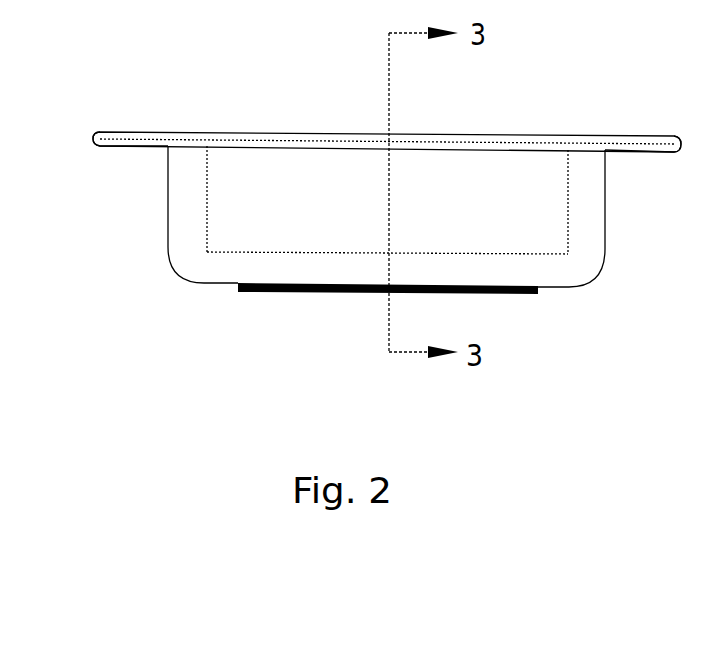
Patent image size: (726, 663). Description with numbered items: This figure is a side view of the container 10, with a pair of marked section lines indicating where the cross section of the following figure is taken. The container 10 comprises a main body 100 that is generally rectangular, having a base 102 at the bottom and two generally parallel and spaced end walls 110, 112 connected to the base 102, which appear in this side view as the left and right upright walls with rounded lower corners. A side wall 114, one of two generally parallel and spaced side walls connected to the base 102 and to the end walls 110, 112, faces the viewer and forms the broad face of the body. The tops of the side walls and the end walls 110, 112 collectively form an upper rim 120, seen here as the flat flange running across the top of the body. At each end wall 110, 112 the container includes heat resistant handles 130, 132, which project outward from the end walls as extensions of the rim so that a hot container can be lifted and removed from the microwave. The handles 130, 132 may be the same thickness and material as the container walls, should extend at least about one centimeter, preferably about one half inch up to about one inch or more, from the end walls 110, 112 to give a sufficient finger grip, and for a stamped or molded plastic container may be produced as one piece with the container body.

The container 10 is at (147, 352).
The main body 100 is at (180, 270).
The base 102 is at (337, 288).
The end wall 110 is at (168, 208).
The end wall 112 is at (603, 215).
The side wall 114 is at (490, 208).
The upper rim 120 is at (260, 135).
The heat resistant handle 130 is at (120, 132).
The heat resistant handle 132 is at (642, 138).